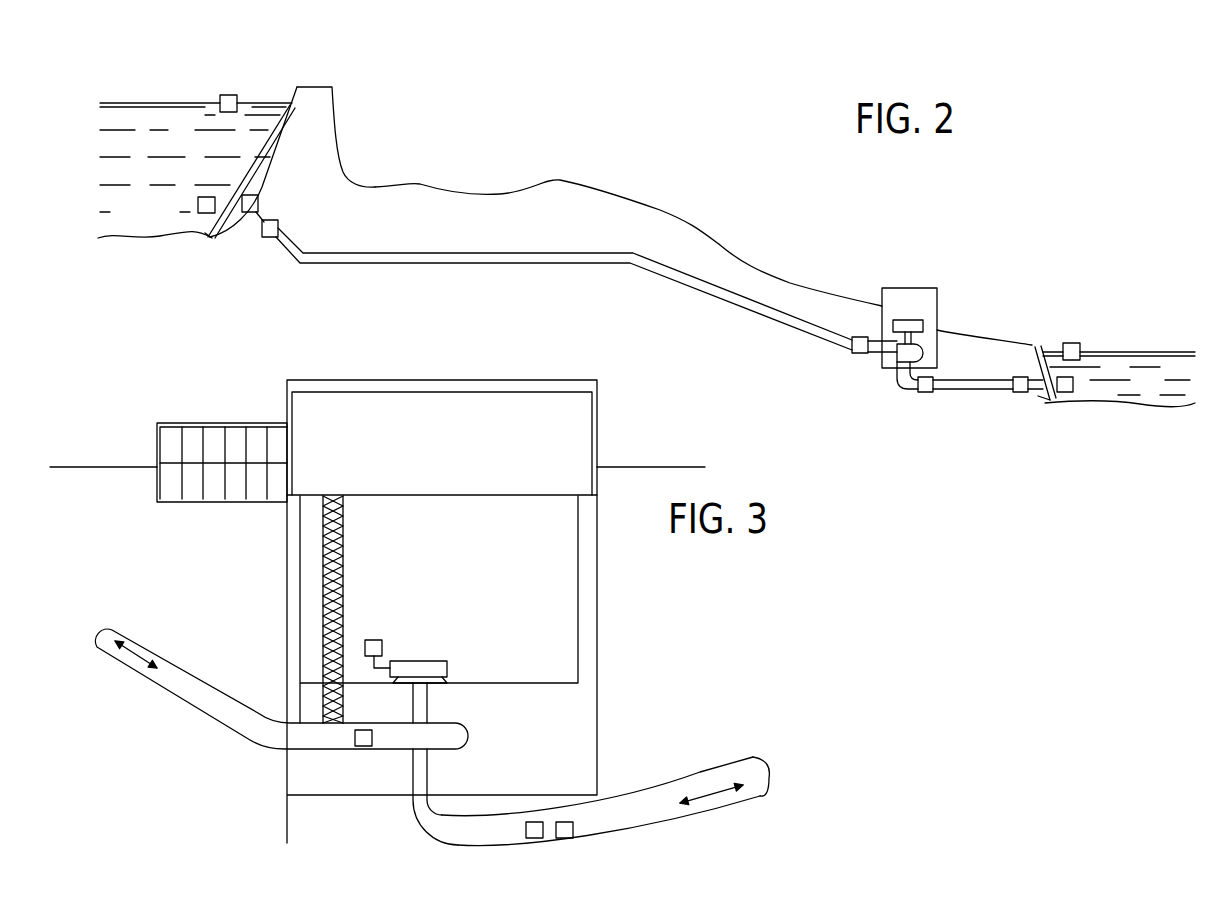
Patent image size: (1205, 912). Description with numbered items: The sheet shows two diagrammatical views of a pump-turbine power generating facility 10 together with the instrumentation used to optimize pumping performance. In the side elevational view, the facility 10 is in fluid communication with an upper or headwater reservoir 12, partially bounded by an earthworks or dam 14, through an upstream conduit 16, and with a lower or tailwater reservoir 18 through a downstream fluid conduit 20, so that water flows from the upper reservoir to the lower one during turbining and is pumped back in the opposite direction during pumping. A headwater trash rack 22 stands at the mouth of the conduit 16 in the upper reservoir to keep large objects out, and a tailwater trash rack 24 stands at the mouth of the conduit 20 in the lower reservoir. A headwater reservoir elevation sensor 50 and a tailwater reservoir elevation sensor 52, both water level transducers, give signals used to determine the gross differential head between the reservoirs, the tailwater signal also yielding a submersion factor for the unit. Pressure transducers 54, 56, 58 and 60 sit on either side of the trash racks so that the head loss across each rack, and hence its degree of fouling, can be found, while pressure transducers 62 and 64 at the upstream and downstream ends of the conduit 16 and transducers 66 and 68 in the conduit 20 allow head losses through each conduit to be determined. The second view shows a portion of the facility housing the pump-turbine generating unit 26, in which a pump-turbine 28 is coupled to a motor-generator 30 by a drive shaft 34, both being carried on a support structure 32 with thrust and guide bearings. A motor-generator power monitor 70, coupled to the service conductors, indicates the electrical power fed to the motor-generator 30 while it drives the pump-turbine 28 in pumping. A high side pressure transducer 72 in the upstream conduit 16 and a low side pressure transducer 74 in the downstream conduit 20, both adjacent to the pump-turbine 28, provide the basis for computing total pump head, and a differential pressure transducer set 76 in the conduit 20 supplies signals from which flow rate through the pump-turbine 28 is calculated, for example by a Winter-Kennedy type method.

In FIG. 2, the pump-turbine power generating facility 10 is at (910, 288).
In FIG. 3, the pump-turbine power generating facility 10 is at (513, 380).
In FIG. 2, the upper or headwater reservoir 12 is at (110, 112).
In FIG. 2, the earthworks or dam 14 is at (320, 112).
In FIG. 2, the upstream conduit 16 is at (665, 278).
In FIG. 3, the upstream conduit 16 is at (205, 682).
In FIG. 2, the lower or tailwater reservoir 18 is at (1150, 352).
In FIG. 2, the downstream fluid conduit 20 is at (965, 393).
In FIG. 3, the downstream fluid conduit 20 is at (638, 826).
In FIG. 2, the headwater trash rack 22 is at (200, 238).
In FIG. 2, the tailwater trash rack 24 is at (1046, 400).
In FIG. 3, the pump-turbine generating unit 26 is at (550, 646).
In FIG. 3, the pump-turbine 28 is at (420, 750).
In FIG. 3, the motor-generator 30 is at (425, 661).
In FIG. 3, the support structure 32 is at (440, 681).
In FIG. 3, the drive shaft 34 is at (413, 707).
In FIG. 2, the headwater reservoir elevation sensor 50 is at (228, 95).
In FIG. 2, the tailwater reservoir elevation sensor 52 is at (1072, 343).
In FIG. 2, the pressure transducer 54 is at (198, 204).
In FIG. 2, the pressure transducer 56 is at (252, 195).
In FIG. 2, the pressure transducer 58 is at (1040, 400).
In FIG. 2, the pressure transducer 60 is at (1073, 388).
In FIG. 2, the pressure transducer 62 is at (280, 226).
In FIG. 2, the pressure transducer 64 is at (857, 353).
In FIG. 2, the transducer 66 is at (922, 393).
In FIG. 2, the transducer 68 is at (1022, 393).
In FIG. 3, the motor-generator power monitor 70 is at (374, 640).
In FIG. 3, the high side pressure transducer 72 is at (363, 747).
In FIG. 3, the low side pressure transducer 74 is at (536, 840).
In FIG. 3, the differential pressure transducer set 76 is at (564, 840).